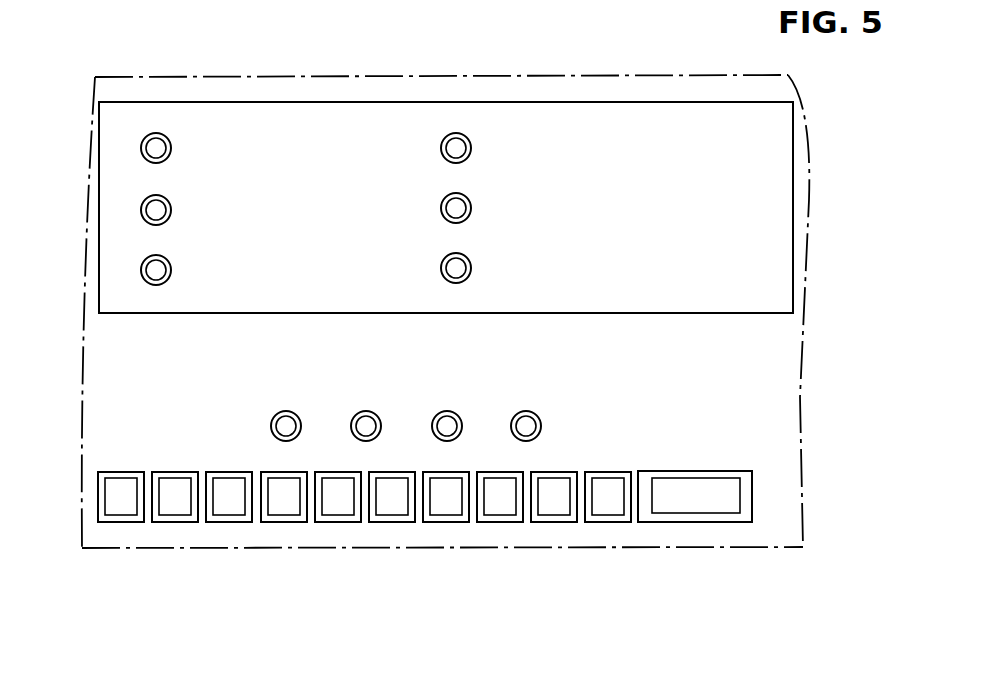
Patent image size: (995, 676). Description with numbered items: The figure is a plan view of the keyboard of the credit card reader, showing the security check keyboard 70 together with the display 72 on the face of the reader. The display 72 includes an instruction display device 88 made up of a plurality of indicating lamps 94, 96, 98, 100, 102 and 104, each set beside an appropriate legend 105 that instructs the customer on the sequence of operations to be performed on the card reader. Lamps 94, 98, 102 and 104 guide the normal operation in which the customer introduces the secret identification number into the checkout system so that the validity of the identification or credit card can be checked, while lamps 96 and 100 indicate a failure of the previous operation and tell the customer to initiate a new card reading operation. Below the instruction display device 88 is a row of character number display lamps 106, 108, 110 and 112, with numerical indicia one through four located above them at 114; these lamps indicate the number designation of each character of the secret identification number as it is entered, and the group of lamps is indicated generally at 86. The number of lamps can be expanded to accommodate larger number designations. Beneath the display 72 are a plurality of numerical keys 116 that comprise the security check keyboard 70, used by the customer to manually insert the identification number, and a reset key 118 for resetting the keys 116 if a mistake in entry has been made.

The security check keyboard 70 is at (763, 547).
The display 72 is at (798, 390).
The lamp group 86 is at (434, 400).
The instruction display device 88 is at (783, 288).
The indicating lamp 94 is at (156, 147).
The indicating lamp 96 is at (152, 205).
The indicating lamp 98 is at (153, 267).
The indicating lamp 100 is at (456, 146).
The indicating lamp 102 is at (455, 206).
The indicating lamp 104 is at (452, 276).
The legends 105 is at (700, 270).
The character number display lamp 106 is at (274, 427).
The character number display lamp 108 is at (360, 432).
The character number display lamp 110 is at (440, 430).
The character number display lamp 112 is at (518, 430).
The numerical indicia 114 is at (537, 377).
The numerical keys 116 is at (178, 517).
The reset key 118 is at (683, 512).